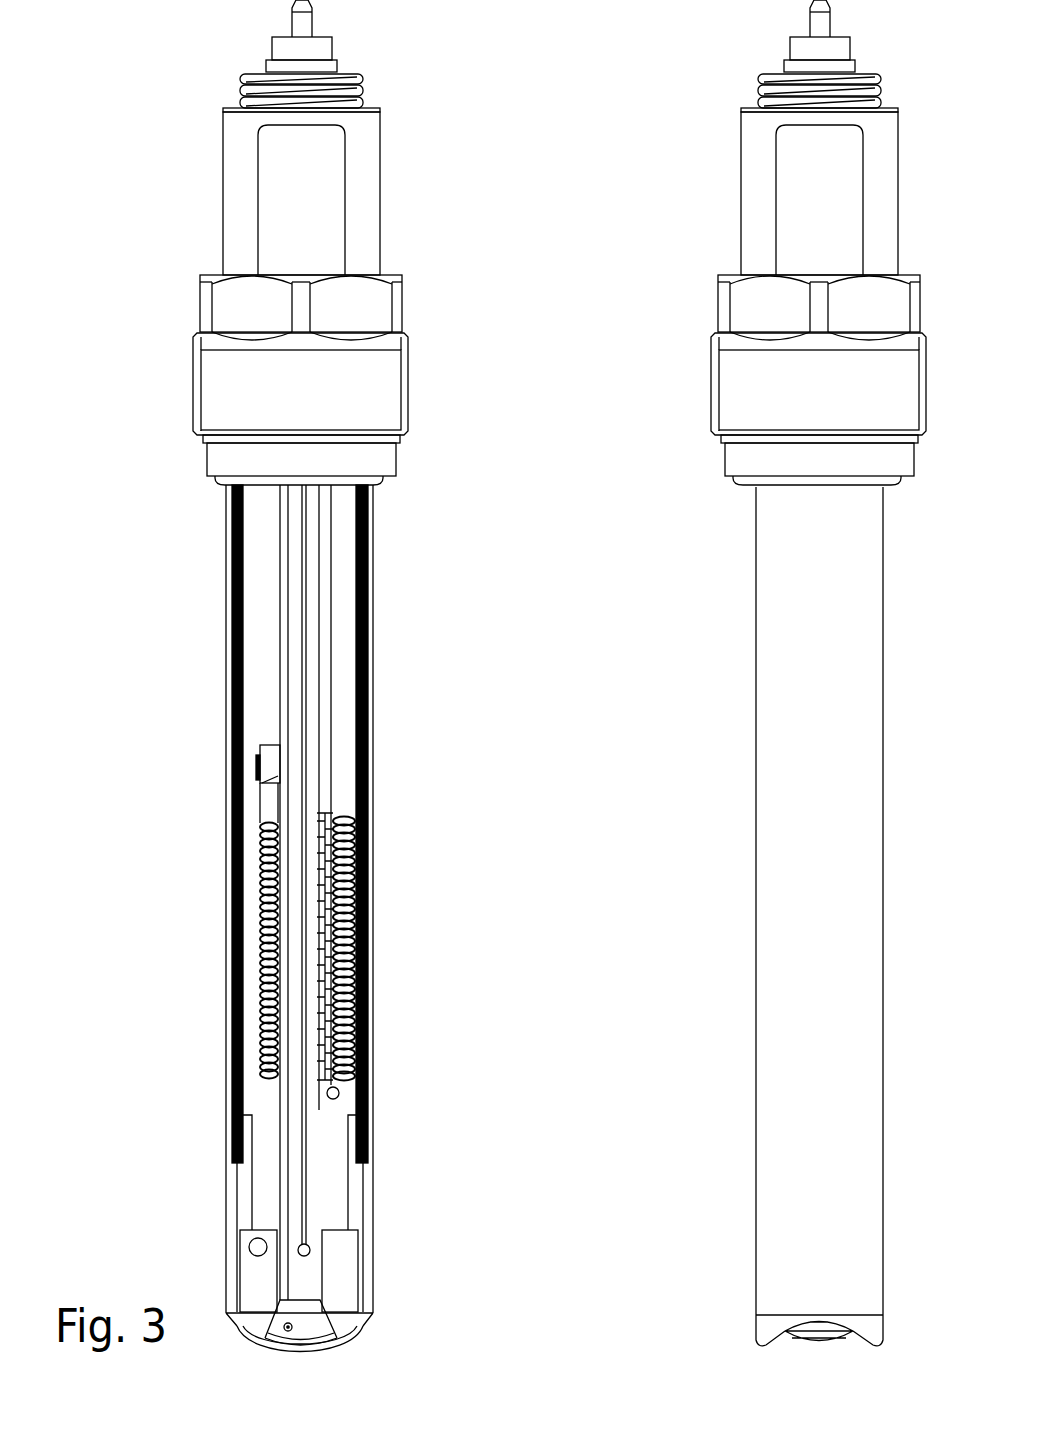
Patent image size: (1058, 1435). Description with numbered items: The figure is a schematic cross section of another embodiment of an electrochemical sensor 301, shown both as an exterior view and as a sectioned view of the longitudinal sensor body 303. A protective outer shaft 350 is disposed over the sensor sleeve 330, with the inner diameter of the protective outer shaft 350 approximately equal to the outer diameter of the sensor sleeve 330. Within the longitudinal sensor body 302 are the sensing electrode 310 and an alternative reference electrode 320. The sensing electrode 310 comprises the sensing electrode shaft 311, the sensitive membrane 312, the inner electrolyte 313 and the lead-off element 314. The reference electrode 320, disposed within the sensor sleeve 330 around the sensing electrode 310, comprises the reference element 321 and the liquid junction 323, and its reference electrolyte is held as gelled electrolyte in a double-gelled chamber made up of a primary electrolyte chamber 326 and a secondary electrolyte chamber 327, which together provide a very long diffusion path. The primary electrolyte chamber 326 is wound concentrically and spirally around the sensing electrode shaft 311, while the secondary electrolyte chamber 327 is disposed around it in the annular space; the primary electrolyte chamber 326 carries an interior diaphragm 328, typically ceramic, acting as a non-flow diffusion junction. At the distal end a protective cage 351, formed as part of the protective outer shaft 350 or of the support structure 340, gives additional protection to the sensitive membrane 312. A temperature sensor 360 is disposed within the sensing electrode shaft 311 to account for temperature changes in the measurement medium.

The sensor assembly 301 is at (715, 245).
The longitudinal sensor body 302 is at (767, 705).
The longitudinal sensor body 303 is at (215, 618).
The sensing electrode 310 is at (503, 1110).
The sensing electrode shaft 311 is at (320, 1110).
The sensitive membrane 312 is at (815, 1340).
The inner electrolyte 313 is at (295, 1193).
The lead-off element 314 is at (305, 1153).
The reference electrode 320 is at (117, 1037).
The reference element 321 is at (328, 1098).
The liquid junction 323 is at (252, 1240).
The primary electrolyte chamber 326 is at (272, 1072).
The secondary electrolyte chamber 327 is at (263, 1148).
The interior diaphragm 328 is at (265, 790).
The sensor sleeve 330 is at (362, 1015).
The support structure 340 is at (363, 1290).
The protective outer shaft 350 is at (755, 925).
The protective cage 351 is at (757, 1343).
The temperature sensor 360 is at (288, 677).